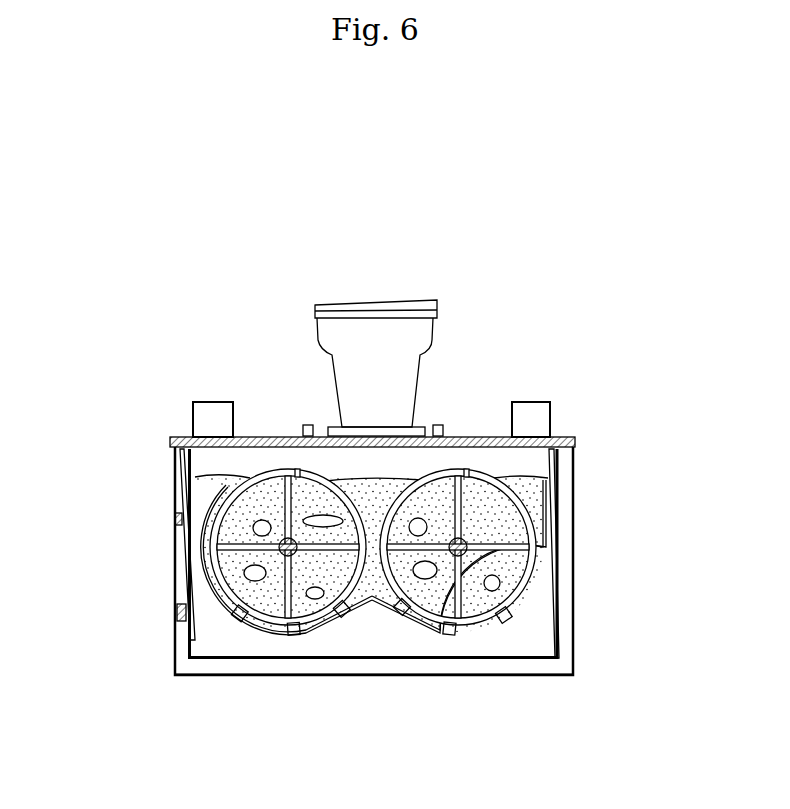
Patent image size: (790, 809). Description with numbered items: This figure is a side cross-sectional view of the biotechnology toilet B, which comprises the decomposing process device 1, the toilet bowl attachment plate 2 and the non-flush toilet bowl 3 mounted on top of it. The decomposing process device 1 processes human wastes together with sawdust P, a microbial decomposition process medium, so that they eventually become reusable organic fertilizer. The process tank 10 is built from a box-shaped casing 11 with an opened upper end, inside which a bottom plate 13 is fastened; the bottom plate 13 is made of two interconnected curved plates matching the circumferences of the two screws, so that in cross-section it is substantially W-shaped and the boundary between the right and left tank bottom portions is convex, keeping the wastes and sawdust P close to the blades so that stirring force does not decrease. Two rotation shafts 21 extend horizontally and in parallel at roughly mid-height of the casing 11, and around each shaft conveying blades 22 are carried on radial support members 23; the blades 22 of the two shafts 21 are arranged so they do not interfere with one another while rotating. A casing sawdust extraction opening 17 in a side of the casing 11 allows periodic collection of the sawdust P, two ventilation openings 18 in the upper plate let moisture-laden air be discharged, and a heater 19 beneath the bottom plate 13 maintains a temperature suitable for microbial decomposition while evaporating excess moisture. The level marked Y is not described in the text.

The decomposing process device 1 is at (422, 667).
The toilet bowl attachment plate 2 is at (415, 428).
The non-flush toilet bowl 3 is at (390, 340).
The process tank 10 is at (480, 668).
The casing 11 is at (540, 672).
The bottom plate 13 is at (325, 633).
The casing sawdust extraction opening 17 is at (180, 557).
The ventilation opening 18 is at (215, 415).
The heater 19 is at (515, 625).
The rotation shaft 21 is at (363, 593).
The conveying blade 22 is at (215, 593).
The support member 23 is at (225, 553).
The sawdust P is at (217, 490).
The toner surface Y is at (217, 512).
The biotechnology toilet B is at (522, 320).